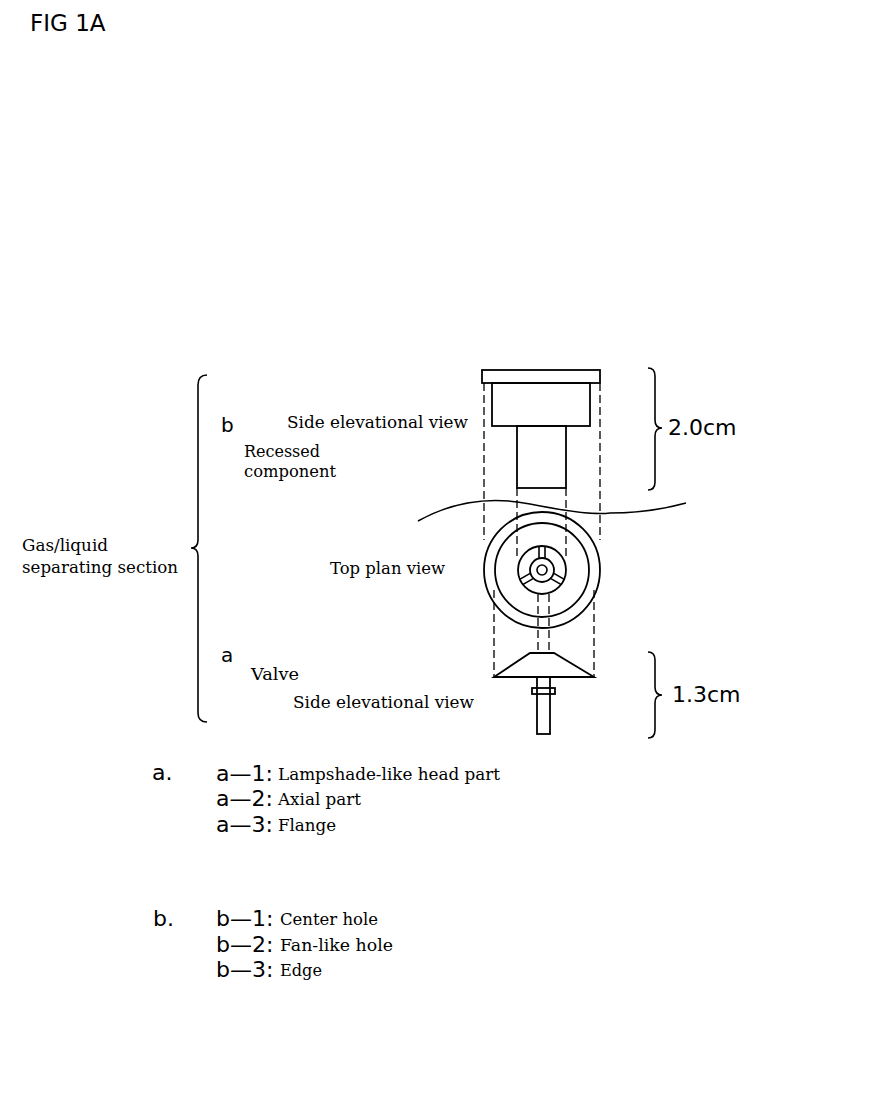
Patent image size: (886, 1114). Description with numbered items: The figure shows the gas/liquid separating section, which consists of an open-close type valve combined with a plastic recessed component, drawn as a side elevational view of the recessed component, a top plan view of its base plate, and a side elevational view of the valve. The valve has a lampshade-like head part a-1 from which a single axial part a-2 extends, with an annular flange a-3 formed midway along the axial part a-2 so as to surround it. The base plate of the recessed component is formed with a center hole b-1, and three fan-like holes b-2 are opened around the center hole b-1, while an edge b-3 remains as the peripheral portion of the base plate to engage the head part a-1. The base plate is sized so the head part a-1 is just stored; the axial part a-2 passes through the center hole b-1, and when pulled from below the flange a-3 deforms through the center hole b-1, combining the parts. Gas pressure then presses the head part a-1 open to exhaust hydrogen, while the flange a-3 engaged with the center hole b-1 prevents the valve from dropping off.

The lampshade-like head part a-1 is at (556, 668).
The axial part a-2 is at (544, 718).
The flange a-3 is at (556, 691).
The center hole b-1 is at (548, 571).
The fan-like hole b-2 is at (556, 553).
The edge b-3 is at (575, 588).